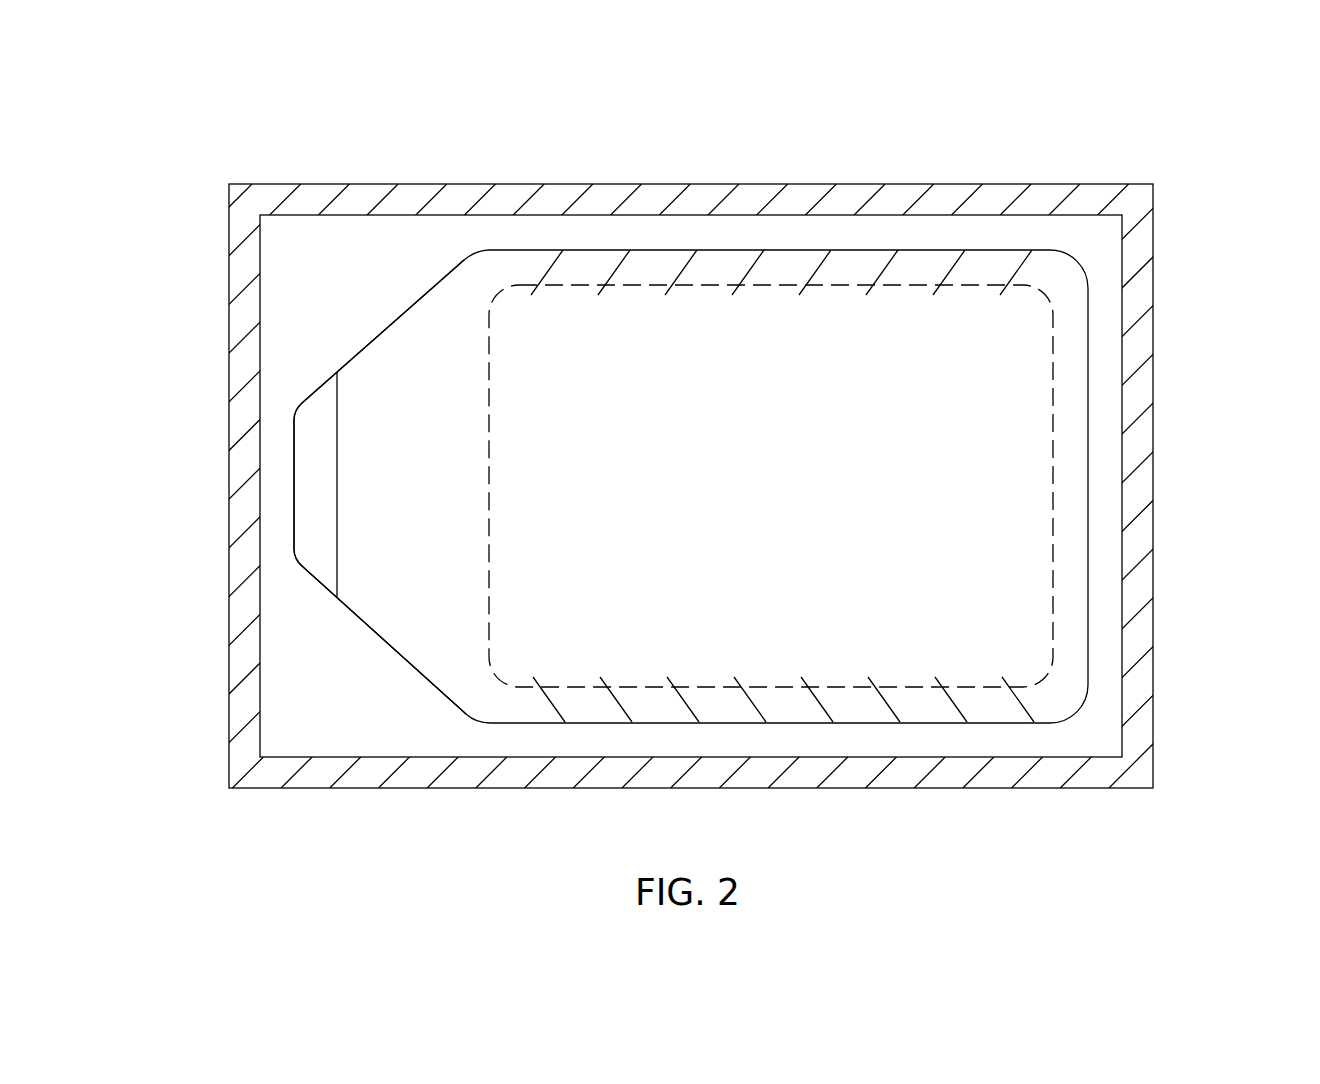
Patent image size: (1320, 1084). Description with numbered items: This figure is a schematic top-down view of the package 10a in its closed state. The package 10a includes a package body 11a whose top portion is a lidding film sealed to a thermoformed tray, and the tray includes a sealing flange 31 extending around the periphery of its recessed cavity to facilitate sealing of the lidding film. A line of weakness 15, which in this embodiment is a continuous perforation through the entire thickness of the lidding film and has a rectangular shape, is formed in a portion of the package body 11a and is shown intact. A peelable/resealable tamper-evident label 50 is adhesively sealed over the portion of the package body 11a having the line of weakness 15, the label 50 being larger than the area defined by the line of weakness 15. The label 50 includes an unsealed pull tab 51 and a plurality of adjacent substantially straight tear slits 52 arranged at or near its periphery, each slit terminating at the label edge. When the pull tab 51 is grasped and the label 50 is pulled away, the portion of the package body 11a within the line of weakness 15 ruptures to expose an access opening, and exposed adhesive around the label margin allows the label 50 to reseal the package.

The package 10a is at (657, 156).
The package body 11a is at (1035, 477).
The line of weakness 15 is at (1060, 283).
The sealing flange 31 is at (307, 297).
The peelable/resealable tamper-evident label 50 is at (430, 615).
The unsealed pull tab 51 is at (318, 487).
The substantially straight tear slits 52 is at (752, 273).